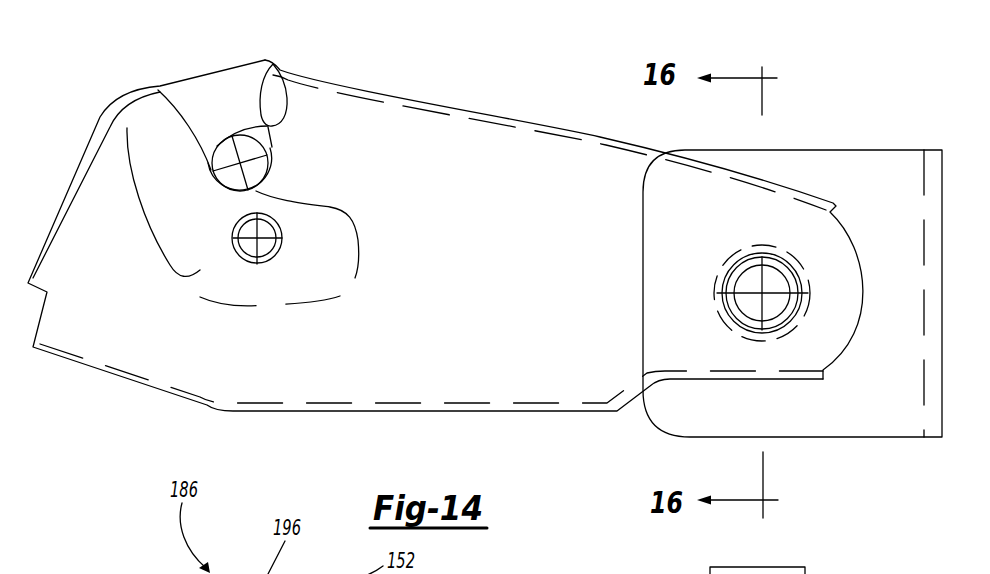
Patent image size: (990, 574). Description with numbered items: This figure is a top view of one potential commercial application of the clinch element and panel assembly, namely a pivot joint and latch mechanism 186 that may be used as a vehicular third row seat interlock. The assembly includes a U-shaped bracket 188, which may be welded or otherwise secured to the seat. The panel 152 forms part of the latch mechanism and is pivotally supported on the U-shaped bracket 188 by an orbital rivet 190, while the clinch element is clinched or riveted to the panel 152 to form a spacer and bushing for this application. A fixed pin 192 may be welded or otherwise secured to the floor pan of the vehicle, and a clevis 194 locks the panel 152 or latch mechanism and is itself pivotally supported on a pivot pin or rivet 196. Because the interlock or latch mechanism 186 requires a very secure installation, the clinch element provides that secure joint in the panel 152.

The panel 152 is at (487, 138).
The pivot joint and latch mechanism 186 is at (410, 82).
The U-shaped bracket 188 is at (864, 186).
The orbital rivet 190 is at (755, 256).
The fixed pin 192 is at (274, 170).
The clevis 194 is at (180, 289).
The pivot pin or rivet 196 is at (283, 248).